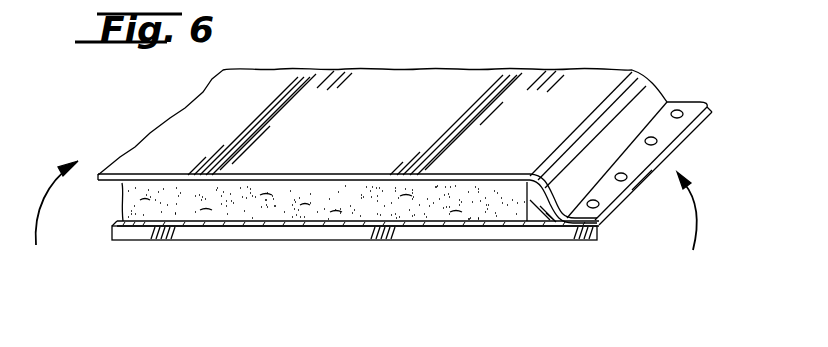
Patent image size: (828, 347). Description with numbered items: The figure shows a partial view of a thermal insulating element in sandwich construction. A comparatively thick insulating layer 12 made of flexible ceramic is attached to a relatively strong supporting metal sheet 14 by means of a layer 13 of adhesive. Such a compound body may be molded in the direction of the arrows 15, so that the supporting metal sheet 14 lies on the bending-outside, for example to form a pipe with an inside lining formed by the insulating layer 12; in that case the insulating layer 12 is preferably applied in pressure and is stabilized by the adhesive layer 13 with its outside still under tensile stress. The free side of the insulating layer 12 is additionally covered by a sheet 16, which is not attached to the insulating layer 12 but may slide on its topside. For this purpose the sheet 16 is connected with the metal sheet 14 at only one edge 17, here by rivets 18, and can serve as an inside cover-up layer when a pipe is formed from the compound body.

The insulating layer 12 is at (489, 212).
The adhesive layer 13 is at (406, 228).
The supporting metal sheet 14 is at (321, 232).
The arrows 15 is at (40, 203).
The sheet 16 is at (461, 101).
The edge 17 is at (667, 131).
The rivets 18 is at (680, 110).